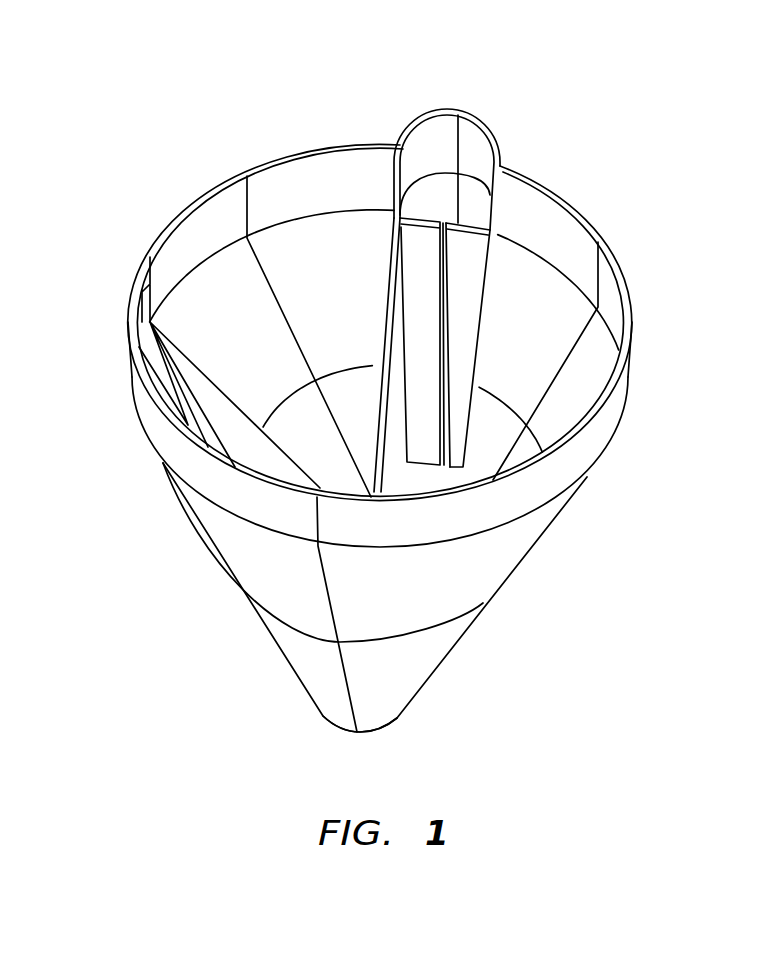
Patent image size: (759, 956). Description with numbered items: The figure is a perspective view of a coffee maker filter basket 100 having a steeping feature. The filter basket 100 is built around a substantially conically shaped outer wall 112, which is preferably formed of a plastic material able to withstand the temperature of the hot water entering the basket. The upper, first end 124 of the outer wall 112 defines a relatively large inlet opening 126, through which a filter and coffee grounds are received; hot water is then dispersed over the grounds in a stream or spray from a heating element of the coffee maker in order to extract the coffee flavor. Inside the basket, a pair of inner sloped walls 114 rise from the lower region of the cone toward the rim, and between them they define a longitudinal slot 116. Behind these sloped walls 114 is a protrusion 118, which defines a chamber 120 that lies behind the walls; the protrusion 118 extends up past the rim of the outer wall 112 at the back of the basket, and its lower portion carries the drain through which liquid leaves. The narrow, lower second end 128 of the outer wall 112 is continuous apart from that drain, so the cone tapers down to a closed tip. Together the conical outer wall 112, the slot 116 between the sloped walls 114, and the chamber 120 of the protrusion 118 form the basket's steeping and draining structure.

The filter basket 100 is at (585, 607).
The outer wall 112 is at (633, 363).
The inner sloped walls 114 is at (453, 290).
The longitudinal slot 116 is at (447, 274).
The protrusion 118 is at (467, 112).
The chamber 120 is at (473, 200).
The first end 124 is at (598, 240).
The inlet opening 126 is at (198, 225).
The second end 128 is at (330, 727).